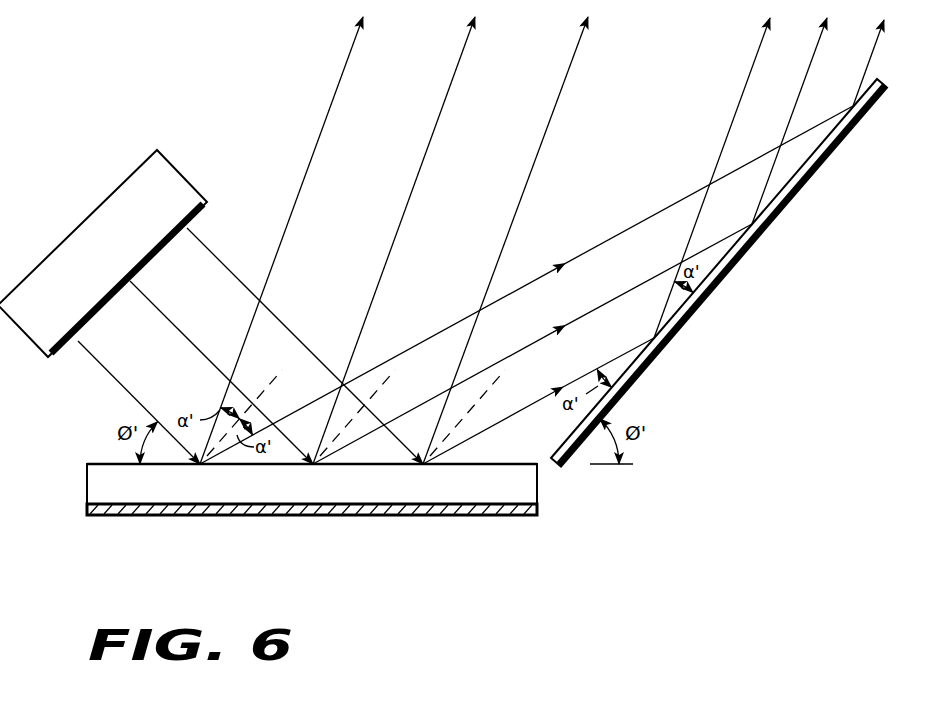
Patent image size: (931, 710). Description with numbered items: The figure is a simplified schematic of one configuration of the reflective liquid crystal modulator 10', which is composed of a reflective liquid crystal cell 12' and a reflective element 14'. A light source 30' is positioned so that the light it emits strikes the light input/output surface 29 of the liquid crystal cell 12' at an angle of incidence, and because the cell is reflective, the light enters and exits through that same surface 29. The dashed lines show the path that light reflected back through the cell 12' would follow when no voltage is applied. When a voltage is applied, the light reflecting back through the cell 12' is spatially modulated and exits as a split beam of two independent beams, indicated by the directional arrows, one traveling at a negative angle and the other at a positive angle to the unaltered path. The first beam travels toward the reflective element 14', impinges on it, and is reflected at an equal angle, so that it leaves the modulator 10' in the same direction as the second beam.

The light source 30' is at (103, 253).
The reflective element 14' is at (719, 273).
The reflective liquid crystal cell 12' is at (283, 491).
The light input/output surface 29 is at (100, 463).
The reflective liquid crystal modulator 10' is at (481, 307).